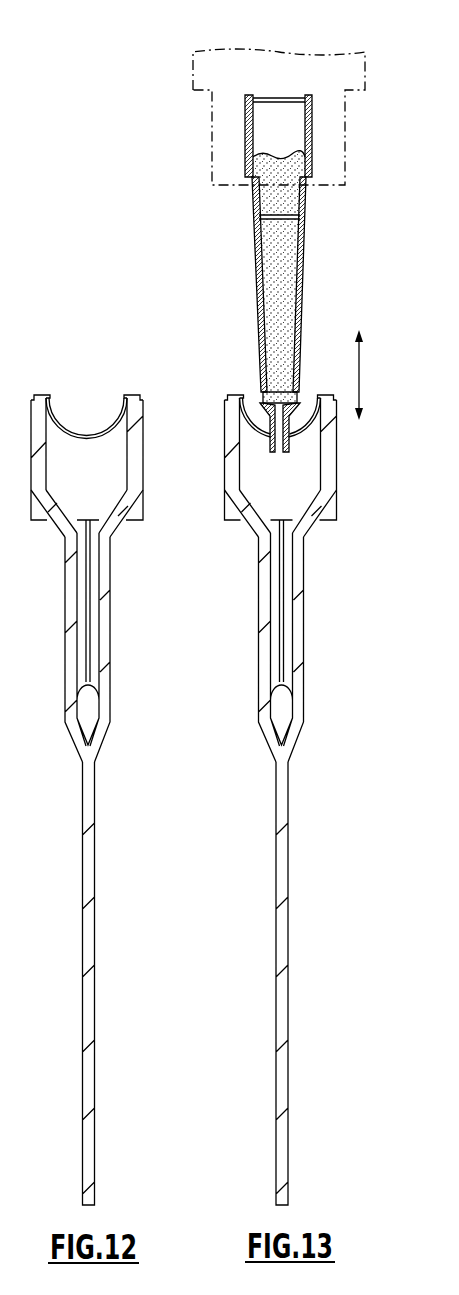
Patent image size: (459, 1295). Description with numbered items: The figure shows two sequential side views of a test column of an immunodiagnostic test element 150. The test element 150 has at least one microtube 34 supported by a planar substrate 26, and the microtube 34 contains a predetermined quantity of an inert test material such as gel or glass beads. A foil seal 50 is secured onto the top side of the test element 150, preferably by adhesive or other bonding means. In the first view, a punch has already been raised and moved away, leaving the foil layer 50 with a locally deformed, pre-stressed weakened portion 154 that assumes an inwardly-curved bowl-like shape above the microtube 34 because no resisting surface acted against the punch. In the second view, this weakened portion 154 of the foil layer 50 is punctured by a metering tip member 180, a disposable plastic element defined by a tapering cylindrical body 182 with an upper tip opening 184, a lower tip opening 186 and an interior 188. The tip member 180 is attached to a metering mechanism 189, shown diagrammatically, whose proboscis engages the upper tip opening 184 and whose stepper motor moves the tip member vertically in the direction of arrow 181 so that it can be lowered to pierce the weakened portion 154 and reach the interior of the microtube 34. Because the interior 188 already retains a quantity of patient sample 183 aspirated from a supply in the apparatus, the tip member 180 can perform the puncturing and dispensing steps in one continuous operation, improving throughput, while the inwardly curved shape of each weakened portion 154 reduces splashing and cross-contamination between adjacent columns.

In FIG. 12, the planar substrate 26 is at (82, 868).
In FIG. 13, the planar substrate 26 is at (250, 983).
In FIG. 12, the microtube 34 is at (60, 530).
In FIG. 13, the microtube 34 is at (270, 532).
In FIG. 12, the foil seal 50 is at (43, 395).
In FIG. 13, the foil seal 50 is at (270, 435).
In FIG. 12, the test element 150 is at (54, 641).
In FIG. 13, the test element 150 is at (249, 641).
In FIG. 12, the weakened portion 154 is at (87, 436).
In FIG. 13, the weakened portion 154 is at (310, 444).
In FIG. 13, the metering tip member 180 is at (241, 266).
In FIG. 13, the arrow 181 is at (358, 372).
In FIG. 13, the tapering cylindrical body 182 is at (305, 280).
In FIG. 13, the patient sample 183 is at (307, 165).
In FIG. 13, the upper tip opening 184 is at (245, 96).
In FIG. 13, the lower tip opening 186 is at (279, 453).
In FIG. 13, the interior 188 is at (257, 230).
In FIG. 13, the metering mechanism 189 is at (202, 68).